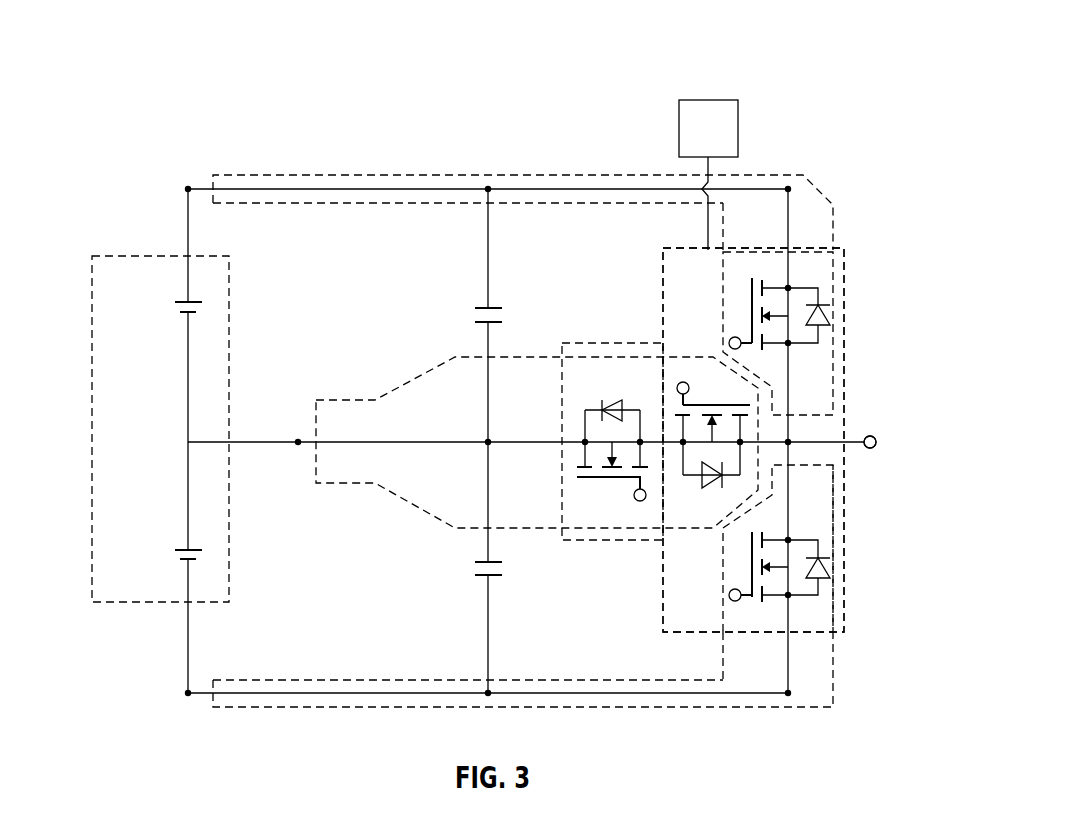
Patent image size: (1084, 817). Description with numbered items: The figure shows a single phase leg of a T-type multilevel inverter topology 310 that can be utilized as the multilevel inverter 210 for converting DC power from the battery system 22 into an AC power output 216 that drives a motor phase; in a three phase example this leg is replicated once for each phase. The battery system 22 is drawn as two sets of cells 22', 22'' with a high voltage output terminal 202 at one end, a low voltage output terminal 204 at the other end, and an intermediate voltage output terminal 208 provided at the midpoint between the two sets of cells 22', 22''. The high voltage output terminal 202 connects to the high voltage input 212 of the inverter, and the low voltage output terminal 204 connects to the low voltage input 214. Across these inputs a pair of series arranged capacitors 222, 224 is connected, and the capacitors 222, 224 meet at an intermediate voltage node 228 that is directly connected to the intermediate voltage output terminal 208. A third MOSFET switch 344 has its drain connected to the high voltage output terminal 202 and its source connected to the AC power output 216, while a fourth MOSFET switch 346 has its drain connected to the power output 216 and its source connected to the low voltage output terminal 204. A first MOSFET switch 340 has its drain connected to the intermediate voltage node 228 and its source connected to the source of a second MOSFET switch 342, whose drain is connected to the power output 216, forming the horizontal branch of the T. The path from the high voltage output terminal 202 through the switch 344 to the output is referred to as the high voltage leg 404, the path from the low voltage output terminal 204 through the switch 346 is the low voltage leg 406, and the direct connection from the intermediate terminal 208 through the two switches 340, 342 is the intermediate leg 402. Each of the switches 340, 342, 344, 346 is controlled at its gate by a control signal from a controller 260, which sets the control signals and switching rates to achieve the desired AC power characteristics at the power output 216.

The battery system 22 is at (154, 394).
The first set of cells 22' is at (163, 289).
The second set of cells 22'' is at (163, 537).
The high voltage output terminal 202 is at (188, 186).
The low voltage output terminal 204 is at (186, 696).
The intermediate voltage output terminal 208 is at (297, 440).
The multilevel inverter 210 is at (843, 250).
The T-type inverter phase leg 310 is at (753, 440).
The high voltage input 212 is at (790, 187).
The low voltage input 214 is at (790, 697).
The AC power output 216 is at (870, 436).
The capacitor 222 is at (483, 306).
The capacitor 224 is at (483, 560).
The intermediate voltage node 228 is at (486, 440).
The controller 260 is at (708, 100).
The first MOSFET switch 340 is at (632, 405).
The second MOSFET switch 342 is at (742, 447).
The third MOSFET switch 344 is at (818, 290).
The fourth MOSFET switch 346 is at (810, 597).
The intermediate leg 402 is at (418, 377).
The high voltage leg 404 is at (440, 175).
The low voltage leg 406 is at (672, 708).